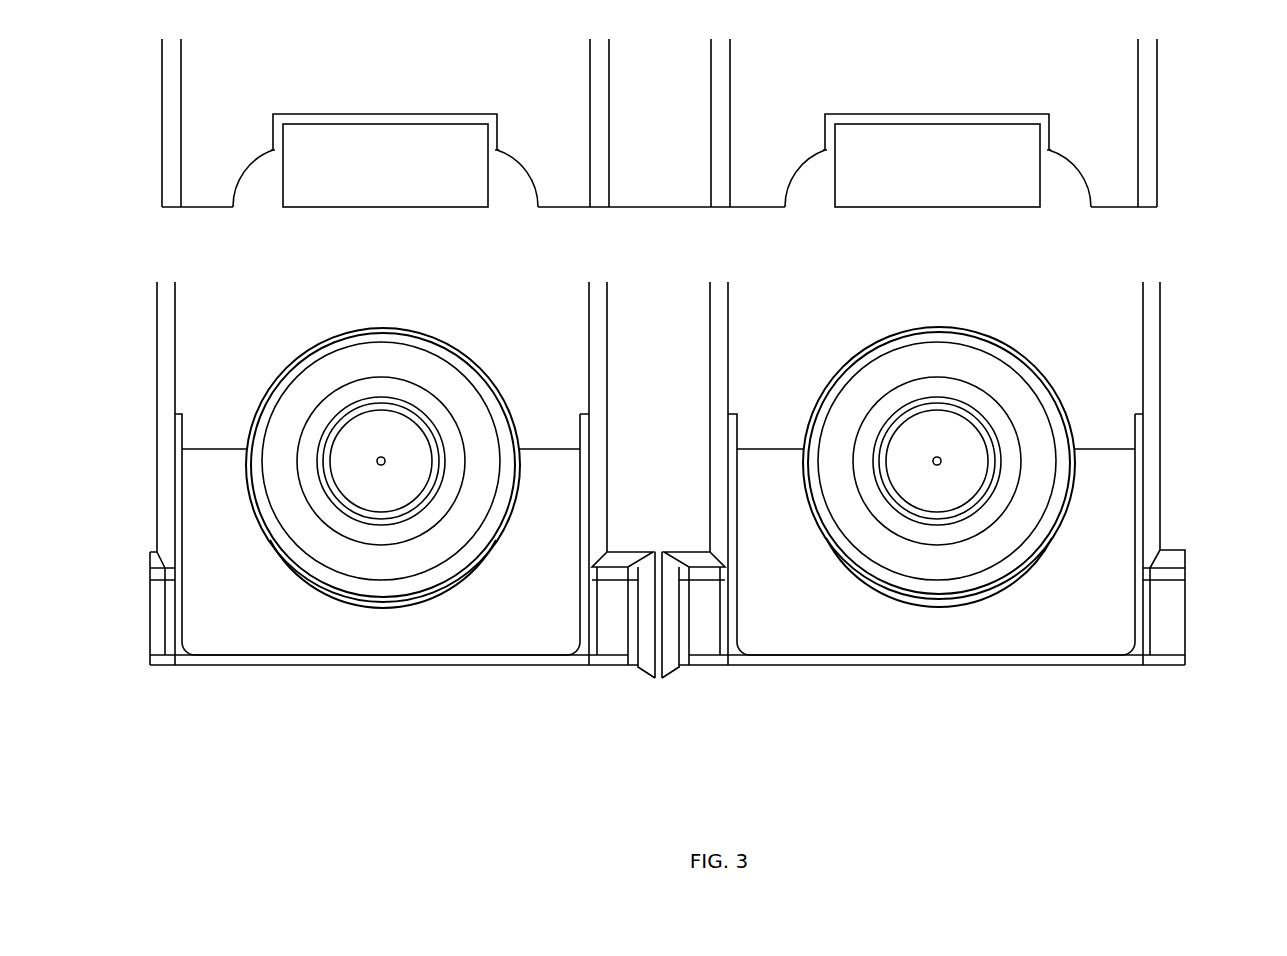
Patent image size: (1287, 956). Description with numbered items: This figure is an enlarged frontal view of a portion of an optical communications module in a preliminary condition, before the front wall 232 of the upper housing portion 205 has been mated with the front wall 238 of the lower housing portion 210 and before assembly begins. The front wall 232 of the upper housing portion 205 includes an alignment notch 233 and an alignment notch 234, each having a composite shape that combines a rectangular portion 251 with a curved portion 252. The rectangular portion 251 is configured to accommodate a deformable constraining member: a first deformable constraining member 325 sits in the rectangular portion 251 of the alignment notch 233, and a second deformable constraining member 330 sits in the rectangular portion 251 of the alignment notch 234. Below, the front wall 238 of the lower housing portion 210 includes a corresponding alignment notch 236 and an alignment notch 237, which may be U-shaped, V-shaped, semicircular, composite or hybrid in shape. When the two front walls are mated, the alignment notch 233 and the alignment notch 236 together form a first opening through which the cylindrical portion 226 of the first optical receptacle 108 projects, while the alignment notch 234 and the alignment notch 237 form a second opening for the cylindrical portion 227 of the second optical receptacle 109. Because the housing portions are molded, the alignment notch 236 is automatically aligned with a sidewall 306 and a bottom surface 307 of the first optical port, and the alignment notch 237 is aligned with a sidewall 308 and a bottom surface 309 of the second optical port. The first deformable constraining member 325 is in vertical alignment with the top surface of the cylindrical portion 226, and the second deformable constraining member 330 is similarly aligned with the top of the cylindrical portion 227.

The upper housing portion 205 is at (1214, 114).
The lower housing portion 210 is at (1220, 405).
The front wall 232 is at (336, 59).
The alignment notch 233 is at (441, 102).
The alignment notch 234 is at (993, 96).
The rectangular portion 251 is at (254, 136).
The curved portion 252 is at (225, 179).
The first deformable constraining member 325 is at (368, 176).
The second deformable constraining member 330 is at (920, 176).
The first optical receptacle 108 is at (243, 410).
The second optical receptacle 109 is at (794, 407).
The cylindrical portion 226 is at (501, 393).
The cylindrical portion 227 is at (1056, 389).
The alignment notch 236 is at (484, 569).
The alignment notch 237 is at (1041, 563).
The front wall 238 is at (235, 606).
The sidewall 306 is at (188, 559).
The bottom surface 307 is at (366, 654).
The sidewall 308 is at (1132, 567).
The bottom surface 309 is at (926, 654).